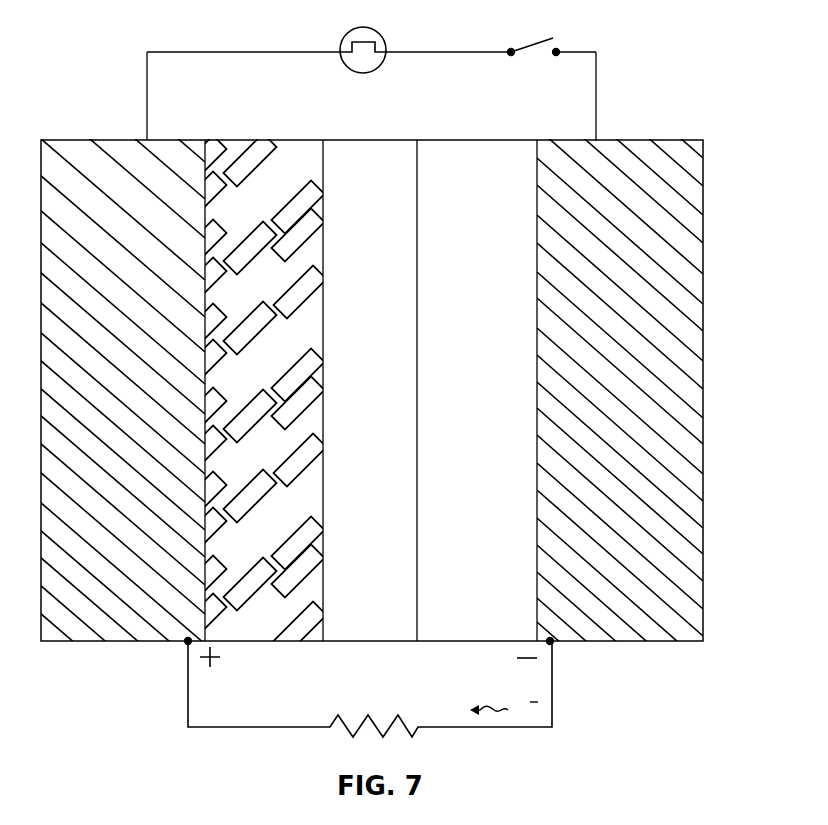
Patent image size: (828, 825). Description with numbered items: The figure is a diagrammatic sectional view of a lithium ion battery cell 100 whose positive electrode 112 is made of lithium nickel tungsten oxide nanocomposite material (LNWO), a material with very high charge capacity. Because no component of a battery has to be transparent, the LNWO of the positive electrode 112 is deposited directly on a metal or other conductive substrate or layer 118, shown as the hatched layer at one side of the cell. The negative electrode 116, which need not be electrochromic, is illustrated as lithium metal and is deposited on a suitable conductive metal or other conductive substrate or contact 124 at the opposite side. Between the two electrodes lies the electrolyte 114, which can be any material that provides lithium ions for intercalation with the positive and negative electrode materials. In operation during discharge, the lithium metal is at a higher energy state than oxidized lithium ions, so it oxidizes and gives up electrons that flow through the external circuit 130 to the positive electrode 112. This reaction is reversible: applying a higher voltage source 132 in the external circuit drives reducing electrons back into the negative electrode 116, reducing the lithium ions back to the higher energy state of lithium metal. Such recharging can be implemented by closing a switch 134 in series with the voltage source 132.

The lithium ion battery cell 100 is at (295, 109).
The positive electrode 112 is at (300, 138).
The electrolyte 114 is at (389, 140).
The negative electrode 116 is at (482, 142).
The conductive substrate or layer 118 is at (116, 138).
The conductive substrate or contact 124 is at (623, 140).
The external circuit 130 is at (188, 700).
The voltage source 132 is at (368, 28).
The switch 134 is at (553, 38).